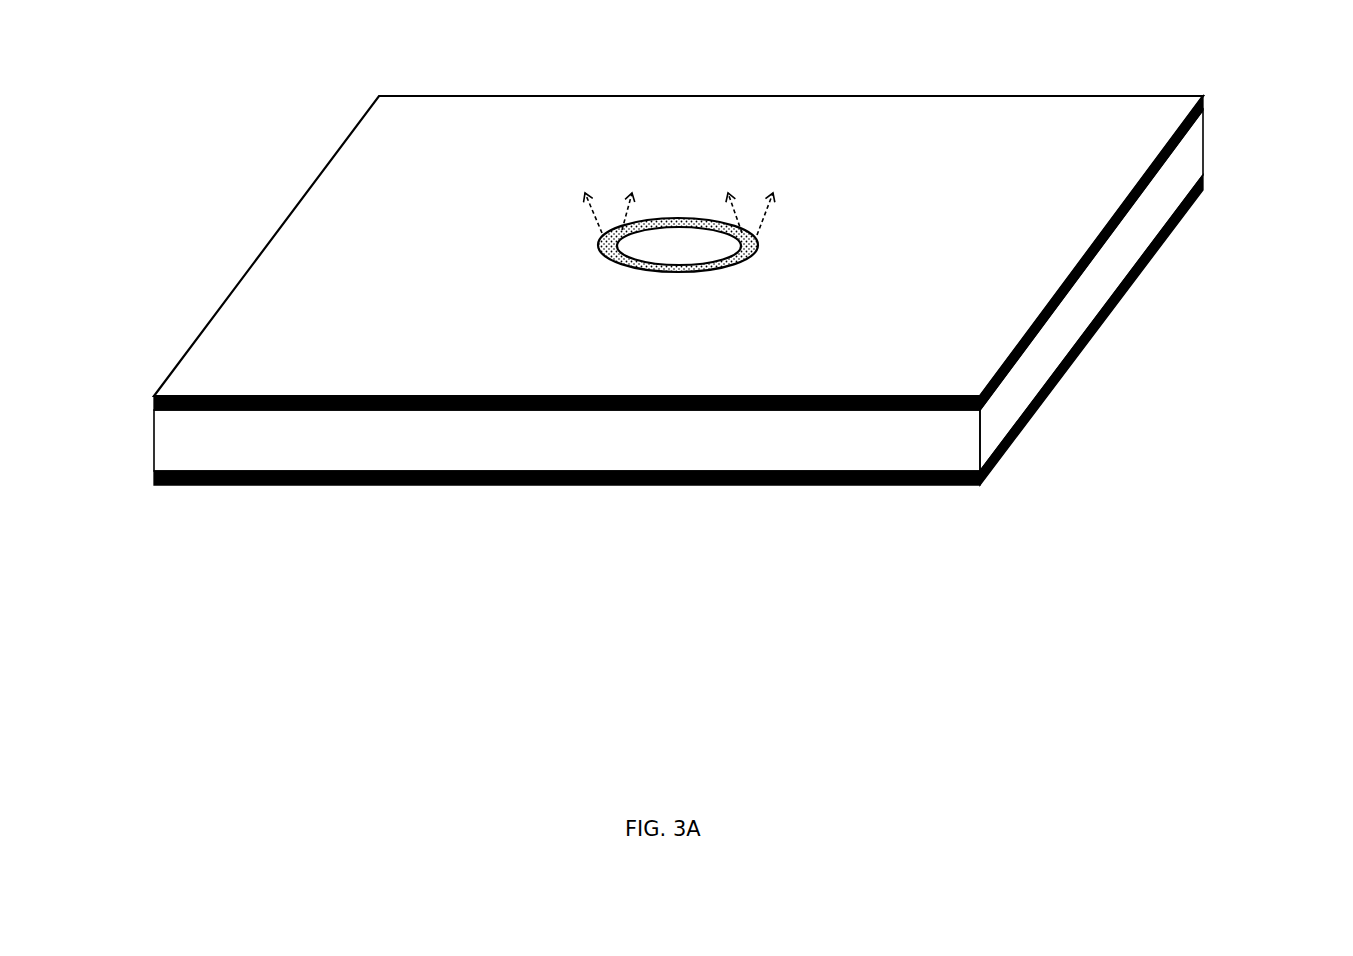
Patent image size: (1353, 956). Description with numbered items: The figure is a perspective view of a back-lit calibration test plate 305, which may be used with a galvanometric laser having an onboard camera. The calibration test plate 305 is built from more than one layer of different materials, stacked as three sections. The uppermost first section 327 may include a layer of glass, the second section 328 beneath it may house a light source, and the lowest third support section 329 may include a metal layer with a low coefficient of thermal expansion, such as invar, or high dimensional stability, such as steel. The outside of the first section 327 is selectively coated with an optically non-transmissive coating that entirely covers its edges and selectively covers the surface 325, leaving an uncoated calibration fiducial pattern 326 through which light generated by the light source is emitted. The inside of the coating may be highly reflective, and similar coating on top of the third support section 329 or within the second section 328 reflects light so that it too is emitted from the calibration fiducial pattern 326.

The back-lit calibration test plate 305 is at (736, 403).
The surface 325 is at (940, 116).
The calibration fiducial pattern 326 is at (624, 266).
The first section 327 is at (1204, 98).
The second section 328 is at (1204, 133).
The third support section 329 is at (1204, 178).